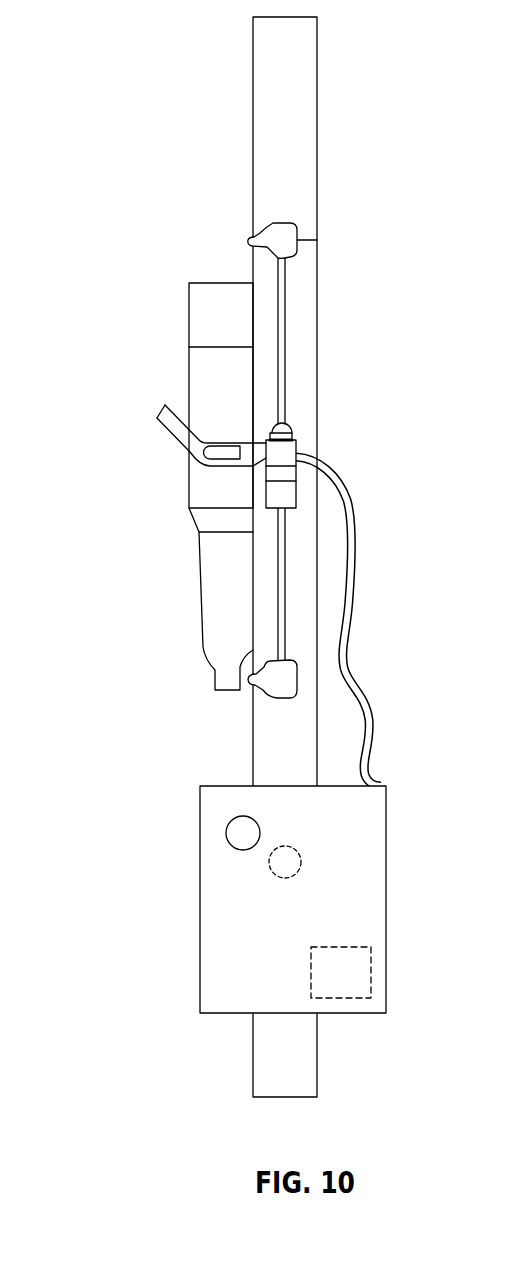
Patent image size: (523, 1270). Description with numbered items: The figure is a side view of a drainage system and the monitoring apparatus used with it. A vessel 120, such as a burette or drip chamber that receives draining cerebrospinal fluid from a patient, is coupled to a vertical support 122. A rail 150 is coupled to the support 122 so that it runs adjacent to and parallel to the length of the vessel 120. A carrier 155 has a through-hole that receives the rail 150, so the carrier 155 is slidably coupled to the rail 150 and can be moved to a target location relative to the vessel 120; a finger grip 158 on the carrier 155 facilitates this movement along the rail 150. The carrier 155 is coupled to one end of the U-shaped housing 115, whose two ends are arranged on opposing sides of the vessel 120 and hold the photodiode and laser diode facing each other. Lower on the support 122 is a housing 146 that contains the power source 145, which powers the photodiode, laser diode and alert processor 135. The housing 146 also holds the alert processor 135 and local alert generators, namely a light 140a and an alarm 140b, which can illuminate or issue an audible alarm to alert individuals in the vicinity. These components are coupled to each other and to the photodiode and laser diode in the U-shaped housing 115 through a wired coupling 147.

The U-shaped housing 115 is at (206, 48).
The vertical support 122 is at (253, 88).
The vessel 120 is at (187, 308).
The rail 150 is at (278, 283).
The finger grip 158 is at (277, 493).
The power source 145 is at (157, 417).
The carrier 155 is at (225, 453).
The wired coupling 147 is at (327, 462).
The housing 146 is at (200, 810).
The light 140a is at (226, 833).
The alarm 140b is at (268, 865).
The alert processor 135 is at (338, 998).